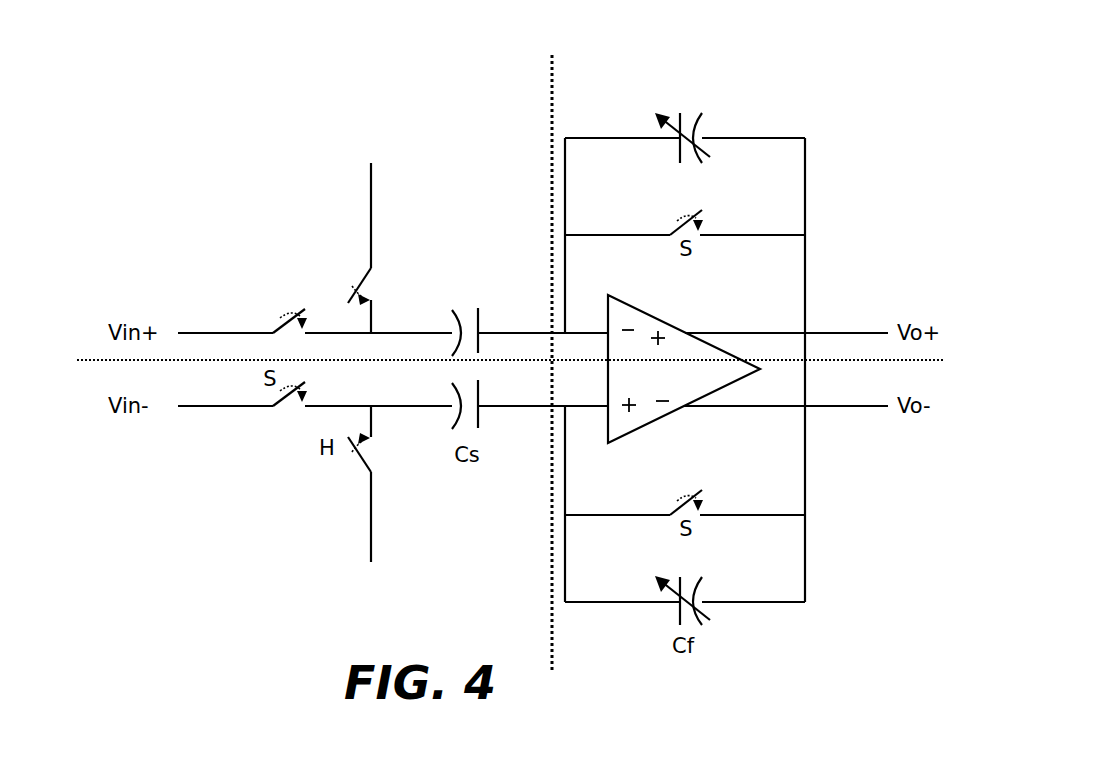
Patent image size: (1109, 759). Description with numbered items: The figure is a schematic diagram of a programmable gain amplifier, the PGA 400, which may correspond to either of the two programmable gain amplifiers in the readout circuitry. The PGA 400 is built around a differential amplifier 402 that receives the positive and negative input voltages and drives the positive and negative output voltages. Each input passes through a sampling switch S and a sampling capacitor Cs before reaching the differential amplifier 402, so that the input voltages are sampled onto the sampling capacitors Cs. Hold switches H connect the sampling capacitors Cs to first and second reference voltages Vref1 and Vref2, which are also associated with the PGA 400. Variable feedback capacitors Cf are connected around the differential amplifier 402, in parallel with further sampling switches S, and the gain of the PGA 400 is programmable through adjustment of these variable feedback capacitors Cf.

The PGA 400 is at (555, 350).
The differential amplifier 402 is at (647, 312).
The sampling switches S is at (285, 313).
The hold switches H is at (348, 300).
The sampling capacitors Cs is at (466, 316).
The variable feedback capacitors Cf is at (682, 119).
The first reference voltage Vref1 is at (371, 198).
The second reference voltage Vref2 is at (371, 534).